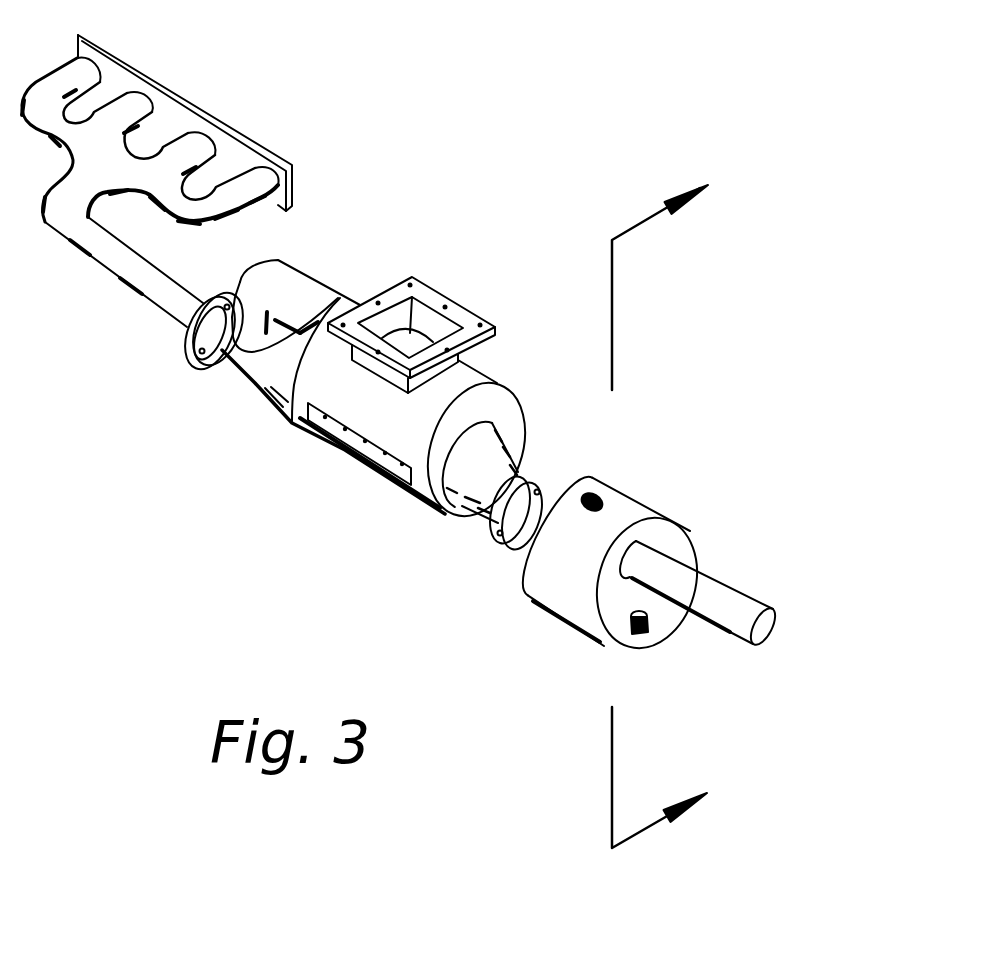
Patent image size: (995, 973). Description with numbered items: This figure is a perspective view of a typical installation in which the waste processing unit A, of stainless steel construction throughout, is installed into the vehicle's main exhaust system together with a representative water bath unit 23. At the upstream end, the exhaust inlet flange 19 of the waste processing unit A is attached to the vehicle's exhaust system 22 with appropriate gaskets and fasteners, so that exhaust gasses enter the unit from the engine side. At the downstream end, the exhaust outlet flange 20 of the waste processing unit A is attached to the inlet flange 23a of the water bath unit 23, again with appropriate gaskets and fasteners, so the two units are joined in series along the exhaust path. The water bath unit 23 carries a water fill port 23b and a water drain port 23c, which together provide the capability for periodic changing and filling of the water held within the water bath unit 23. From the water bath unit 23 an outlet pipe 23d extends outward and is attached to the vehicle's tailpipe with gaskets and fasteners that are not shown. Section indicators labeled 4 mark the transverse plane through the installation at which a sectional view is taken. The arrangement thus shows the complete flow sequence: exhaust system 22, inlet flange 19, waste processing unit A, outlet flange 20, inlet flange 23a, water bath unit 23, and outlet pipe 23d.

The waste processing unit A is at (292, 425).
The vehicle's exhaust system 22 is at (110, 283).
The exhaust inlet flange 19 is at (200, 368).
The exhaust outlet flange 20 is at (482, 528).
The water bath unit 23 is at (532, 602).
The inlet flange of the water bath unit 23a is at (550, 477).
The water fill port 23b is at (600, 495).
The water drain port 23c is at (646, 636).
The outlet pipe 23d is at (748, 590).
The section line 4- 4 is at (675, 512).